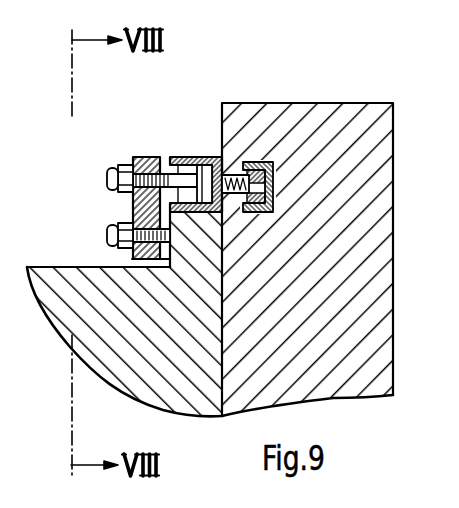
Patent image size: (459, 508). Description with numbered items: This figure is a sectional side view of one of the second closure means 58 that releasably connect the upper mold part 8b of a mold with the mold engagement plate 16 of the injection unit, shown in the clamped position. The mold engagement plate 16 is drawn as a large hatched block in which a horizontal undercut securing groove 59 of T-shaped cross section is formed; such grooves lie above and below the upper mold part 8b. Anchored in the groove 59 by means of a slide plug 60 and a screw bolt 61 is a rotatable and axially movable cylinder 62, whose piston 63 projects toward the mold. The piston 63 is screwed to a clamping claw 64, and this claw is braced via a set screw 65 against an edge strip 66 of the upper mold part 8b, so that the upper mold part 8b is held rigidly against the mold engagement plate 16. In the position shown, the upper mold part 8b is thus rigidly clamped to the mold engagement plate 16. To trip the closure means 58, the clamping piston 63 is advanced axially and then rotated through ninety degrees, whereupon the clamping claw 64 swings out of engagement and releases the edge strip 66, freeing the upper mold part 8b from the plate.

The second closure means 58 is at (208, 112).
The undercut securing grooves 59 is at (255, 165).
The slide plug 60 is at (250, 167).
The screw bolt 61 is at (275, 167).
The rotatable and axially movable cylinder 62 is at (177, 155).
The piston 63 is at (200, 157).
The clamping claw 64 is at (133, 208).
The set screw 65 is at (108, 235).
The edge strip 66 is at (198, 245).
The upper mold part 8b is at (53, 307).
The mold engagement plate 16 is at (328, 112).